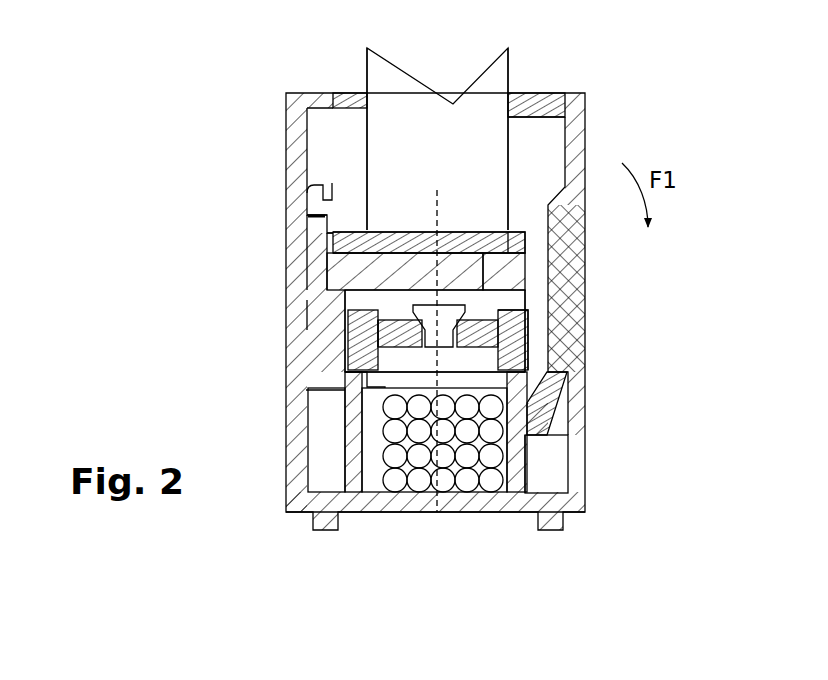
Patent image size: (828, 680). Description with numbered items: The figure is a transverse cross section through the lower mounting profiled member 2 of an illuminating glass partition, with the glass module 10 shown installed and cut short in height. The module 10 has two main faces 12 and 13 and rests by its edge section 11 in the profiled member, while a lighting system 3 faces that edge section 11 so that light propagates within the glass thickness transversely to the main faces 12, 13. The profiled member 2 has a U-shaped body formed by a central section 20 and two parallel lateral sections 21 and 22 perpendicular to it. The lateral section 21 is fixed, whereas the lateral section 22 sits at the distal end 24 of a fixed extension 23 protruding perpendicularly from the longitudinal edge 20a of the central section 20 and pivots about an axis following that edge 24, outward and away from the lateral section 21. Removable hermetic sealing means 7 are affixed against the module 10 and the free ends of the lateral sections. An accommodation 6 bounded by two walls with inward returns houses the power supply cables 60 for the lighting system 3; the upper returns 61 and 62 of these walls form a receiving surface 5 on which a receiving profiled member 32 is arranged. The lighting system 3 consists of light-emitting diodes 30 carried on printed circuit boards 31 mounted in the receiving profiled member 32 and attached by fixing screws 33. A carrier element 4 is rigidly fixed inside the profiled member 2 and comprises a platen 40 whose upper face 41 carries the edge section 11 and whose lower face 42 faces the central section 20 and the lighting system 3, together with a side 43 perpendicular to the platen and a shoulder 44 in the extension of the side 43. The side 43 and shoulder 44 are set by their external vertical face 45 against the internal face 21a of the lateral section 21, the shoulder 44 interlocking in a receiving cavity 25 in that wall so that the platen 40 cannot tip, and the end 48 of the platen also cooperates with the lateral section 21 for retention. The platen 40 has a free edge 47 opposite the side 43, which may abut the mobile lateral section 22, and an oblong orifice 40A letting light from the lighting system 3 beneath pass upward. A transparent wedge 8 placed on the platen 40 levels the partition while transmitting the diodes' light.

The mounting profiled member 2 is at (273, 135).
The lighting system 3 is at (508, 337).
The carrier element 4 is at (527, 288).
The receiving surface 5 is at (543, 368).
The accommodation 6 is at (370, 452).
The hermetic sealing means 7 is at (347, 98).
The wedge 8 is at (512, 242).
The glass module 10 is at (488, 92).
The edge section 11 is at (457, 245).
The main face 12 is at (365, 63).
The main face 13 is at (508, 138).
The central section 20 is at (392, 503).
The longitudinal edge 20a is at (547, 490).
The lateral section 21 is at (287, 343).
The internal face 21a is at (320, 343).
The lateral section 22 is at (567, 280).
The extension 23 is at (580, 437).
The distal end 24 is at (573, 380).
The receiving cavity 25 is at (317, 185).
The light-emitting diodes 30 is at (452, 293).
The support and electrical power supply device 31 is at (405, 292).
The receiving profiled member 32 is at (322, 370).
The fixing screws 33 is at (427, 400).
The platen 40 is at (348, 250).
The orifice 40A is at (500, 315).
The upper face 41 is at (525, 260).
The lower face 42 is at (350, 313).
The side 43 is at (317, 313).
The shoulder 44 is at (313, 228).
The external vertical face 45 is at (307, 277).
The free edge 47 is at (525, 277).
The end 48 is at (318, 257).
The power supply cables 60 is at (478, 462).
The upper return 61 is at (358, 423).
The upper return 62 is at (527, 418).